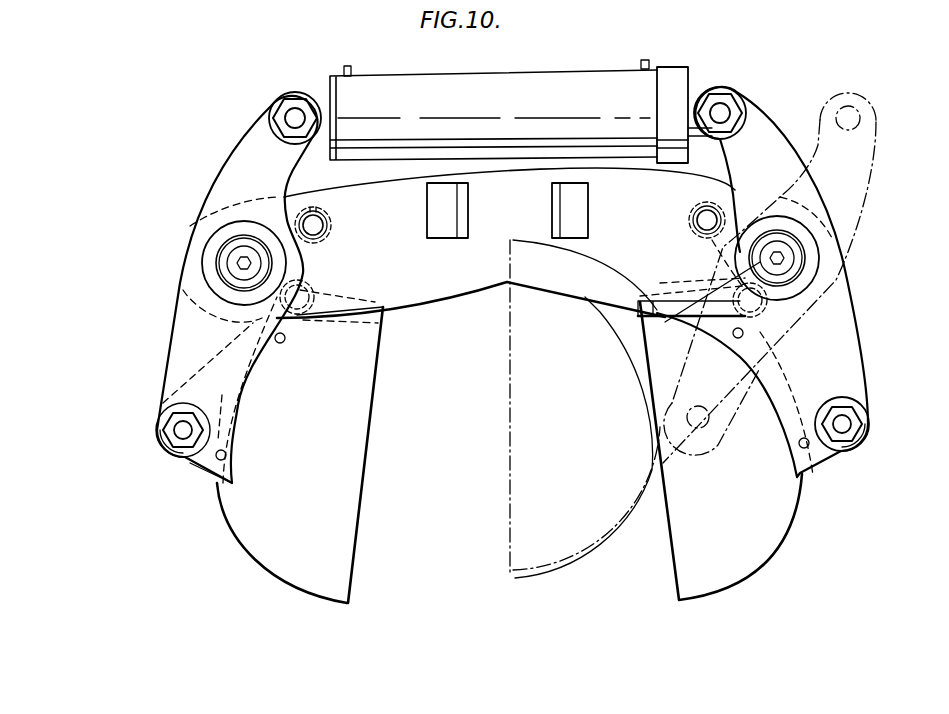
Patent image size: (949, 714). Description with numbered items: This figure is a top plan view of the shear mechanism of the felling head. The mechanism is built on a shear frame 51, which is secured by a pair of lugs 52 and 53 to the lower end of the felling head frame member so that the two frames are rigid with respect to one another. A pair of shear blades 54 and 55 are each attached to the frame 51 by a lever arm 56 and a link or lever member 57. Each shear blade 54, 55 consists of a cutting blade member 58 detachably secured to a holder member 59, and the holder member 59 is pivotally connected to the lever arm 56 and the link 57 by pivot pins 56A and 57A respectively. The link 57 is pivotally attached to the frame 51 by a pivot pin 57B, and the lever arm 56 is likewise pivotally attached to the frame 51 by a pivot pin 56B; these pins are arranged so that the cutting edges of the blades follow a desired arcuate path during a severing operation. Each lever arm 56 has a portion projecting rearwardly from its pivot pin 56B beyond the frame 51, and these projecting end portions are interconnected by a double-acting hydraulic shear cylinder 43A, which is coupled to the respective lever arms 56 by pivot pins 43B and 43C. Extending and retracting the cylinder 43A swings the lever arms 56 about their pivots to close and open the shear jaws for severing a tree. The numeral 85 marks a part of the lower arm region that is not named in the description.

The hydraulic shear cylinder 43A is at (575, 98).
The pivot pin 43B is at (295, 118).
The pivot pin 43C is at (722, 112).
The frame 51 is at (486, 275).
The lug 52 is at (462, 232).
The lug 53 is at (553, 196).
The shear blade 54 is at (306, 503).
The shear blade 55 is at (769, 526).
The lever arm 56 is at (180, 322).
The pivot pin 56A is at (180, 430).
The pivot pin 56B is at (231, 258).
The link or lever member 57 is at (285, 250).
The pivot pin 57A is at (306, 298).
The pivot pin 57B is at (324, 226).
The cutting blade member 58 is at (347, 473).
The holder member 59 is at (282, 345).
The bracket 85 is at (200, 470).